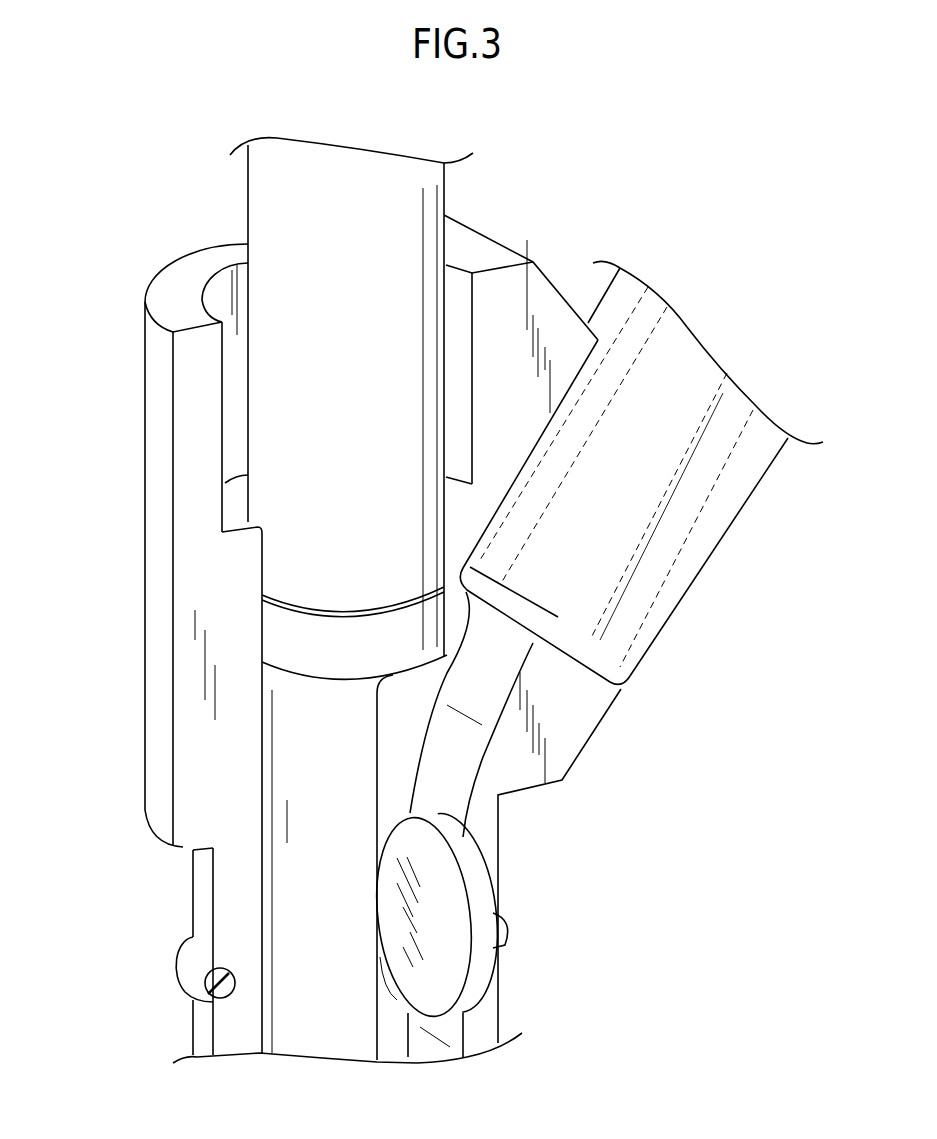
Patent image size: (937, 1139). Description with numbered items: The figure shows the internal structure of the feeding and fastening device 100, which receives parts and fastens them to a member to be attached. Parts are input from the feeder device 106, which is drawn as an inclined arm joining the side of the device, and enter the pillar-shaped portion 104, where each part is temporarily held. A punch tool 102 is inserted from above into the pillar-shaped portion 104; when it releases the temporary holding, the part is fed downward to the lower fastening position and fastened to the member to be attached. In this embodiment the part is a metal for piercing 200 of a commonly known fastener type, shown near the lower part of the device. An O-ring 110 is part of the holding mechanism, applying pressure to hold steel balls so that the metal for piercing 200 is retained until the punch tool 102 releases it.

The feeding and fastening device 100 is at (130, 932).
The punch tool 102 is at (245, 185).
The pillar-shaped portion 104 is at (190, 1033).
The feeder device 106 is at (710, 567).
The O-ring 110 is at (177, 968).
The metal for piercing 200 is at (483, 968).